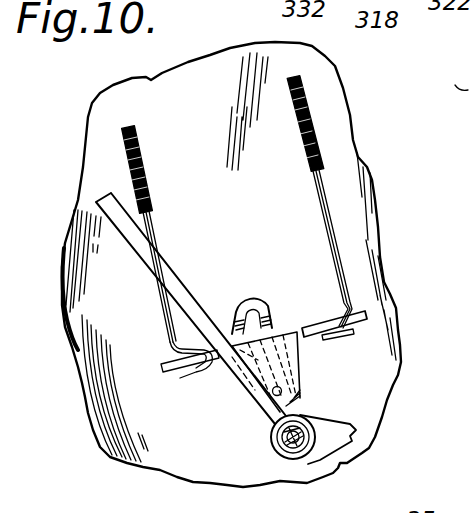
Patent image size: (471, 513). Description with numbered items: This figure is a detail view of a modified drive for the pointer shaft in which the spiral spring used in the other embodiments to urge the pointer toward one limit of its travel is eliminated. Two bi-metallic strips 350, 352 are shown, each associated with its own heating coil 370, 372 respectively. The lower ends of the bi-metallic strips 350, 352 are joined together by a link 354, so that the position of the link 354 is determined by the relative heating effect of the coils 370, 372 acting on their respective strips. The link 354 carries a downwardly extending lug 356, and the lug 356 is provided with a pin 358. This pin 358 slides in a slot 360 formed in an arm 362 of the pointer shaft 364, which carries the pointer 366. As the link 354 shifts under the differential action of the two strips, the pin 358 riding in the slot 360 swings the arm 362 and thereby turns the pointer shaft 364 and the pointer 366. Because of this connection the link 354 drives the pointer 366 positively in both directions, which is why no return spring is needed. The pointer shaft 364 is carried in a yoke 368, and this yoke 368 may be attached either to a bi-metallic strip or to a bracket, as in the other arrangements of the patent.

The bi-metallic strip 350 is at (150, 236).
The bi-metallic strip 352 is at (325, 211).
The link 354 is at (325, 330).
The lug 356 is at (300, 367).
The pin 358 is at (283, 392).
The slot 360 is at (247, 393).
The arm 362 is at (236, 356).
The pointer shaft 364 is at (283, 456).
The pointer 366 is at (141, 247).
The yoke 368 is at (343, 437).
The coil 370 is at (124, 141).
The coil 372 is at (312, 117).